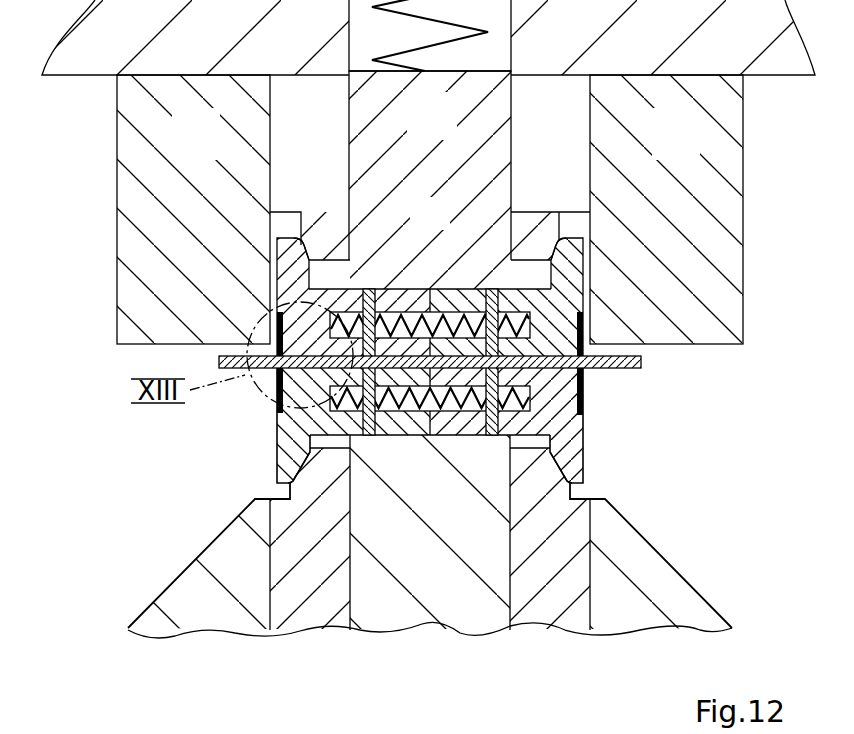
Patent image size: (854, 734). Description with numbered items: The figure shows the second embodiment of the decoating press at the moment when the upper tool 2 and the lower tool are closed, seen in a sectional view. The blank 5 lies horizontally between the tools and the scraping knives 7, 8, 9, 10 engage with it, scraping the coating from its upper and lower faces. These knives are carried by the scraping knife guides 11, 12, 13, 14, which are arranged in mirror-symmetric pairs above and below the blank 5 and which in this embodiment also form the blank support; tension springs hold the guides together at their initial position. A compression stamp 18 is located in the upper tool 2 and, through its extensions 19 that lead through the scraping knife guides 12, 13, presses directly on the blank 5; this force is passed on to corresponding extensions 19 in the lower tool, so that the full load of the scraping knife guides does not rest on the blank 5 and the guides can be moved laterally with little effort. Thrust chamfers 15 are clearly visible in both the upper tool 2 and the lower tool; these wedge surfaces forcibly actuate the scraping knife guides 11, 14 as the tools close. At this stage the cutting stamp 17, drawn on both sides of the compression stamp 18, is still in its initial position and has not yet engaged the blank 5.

The upper tool 2 is at (660, 44).
The blank 5 is at (642, 363).
The scraping knife 7 is at (280, 393).
The scraping knife 8 is at (284, 331).
The scraping knife 9 is at (586, 331).
The scraping knife 10 is at (588, 399).
The scraping knife guide 11 is at (300, 430).
The scraping knife guide 12 is at (297, 288).
The scraping knife guide 13 is at (563, 288).
The scraping knife guide 14 is at (565, 429).
The thrust chamfer 15 is at (309, 250).
The cutting stamp 17 is at (181, 144).
The compression stamp 18 is at (417, 127).
The extension 19 is at (488, 289).